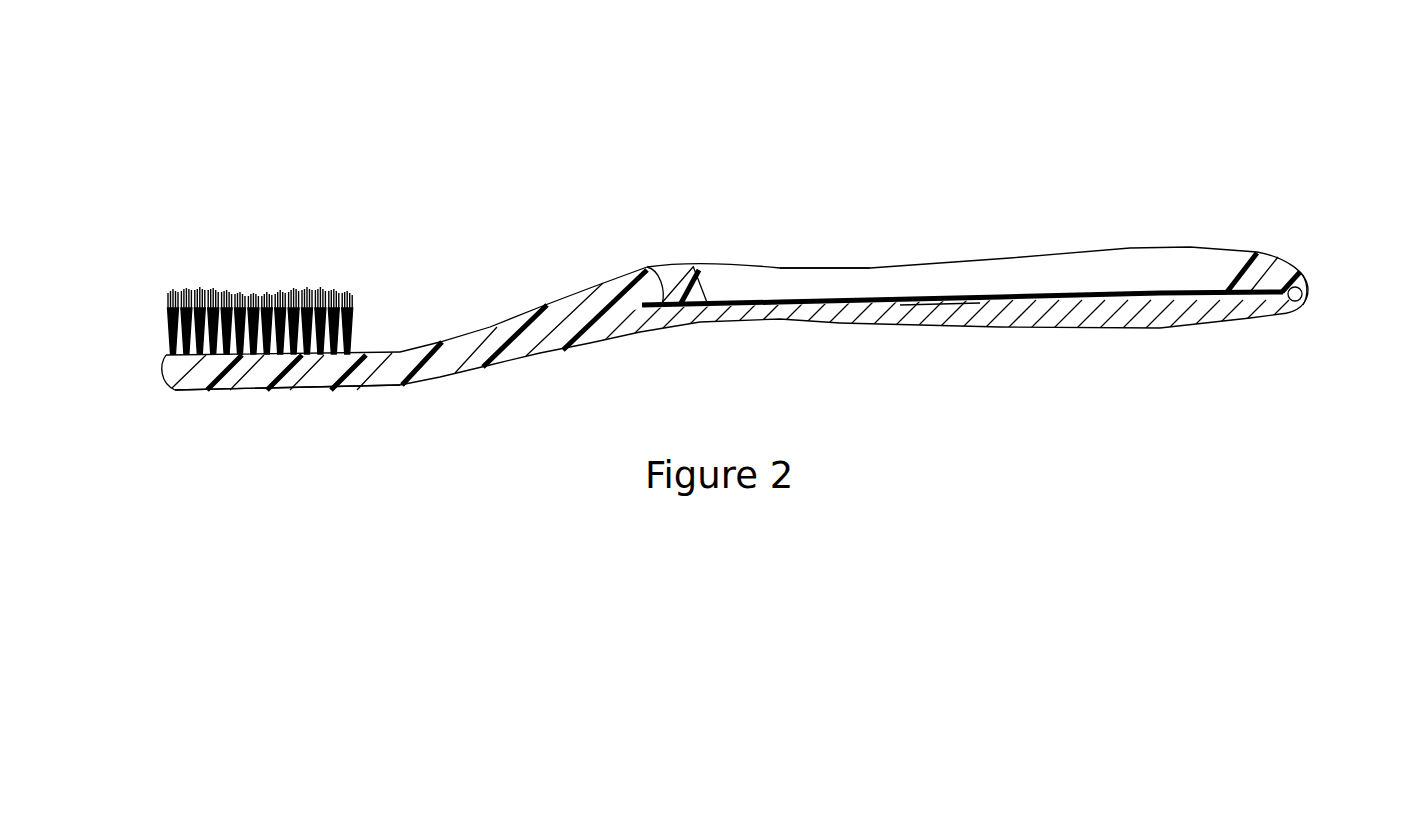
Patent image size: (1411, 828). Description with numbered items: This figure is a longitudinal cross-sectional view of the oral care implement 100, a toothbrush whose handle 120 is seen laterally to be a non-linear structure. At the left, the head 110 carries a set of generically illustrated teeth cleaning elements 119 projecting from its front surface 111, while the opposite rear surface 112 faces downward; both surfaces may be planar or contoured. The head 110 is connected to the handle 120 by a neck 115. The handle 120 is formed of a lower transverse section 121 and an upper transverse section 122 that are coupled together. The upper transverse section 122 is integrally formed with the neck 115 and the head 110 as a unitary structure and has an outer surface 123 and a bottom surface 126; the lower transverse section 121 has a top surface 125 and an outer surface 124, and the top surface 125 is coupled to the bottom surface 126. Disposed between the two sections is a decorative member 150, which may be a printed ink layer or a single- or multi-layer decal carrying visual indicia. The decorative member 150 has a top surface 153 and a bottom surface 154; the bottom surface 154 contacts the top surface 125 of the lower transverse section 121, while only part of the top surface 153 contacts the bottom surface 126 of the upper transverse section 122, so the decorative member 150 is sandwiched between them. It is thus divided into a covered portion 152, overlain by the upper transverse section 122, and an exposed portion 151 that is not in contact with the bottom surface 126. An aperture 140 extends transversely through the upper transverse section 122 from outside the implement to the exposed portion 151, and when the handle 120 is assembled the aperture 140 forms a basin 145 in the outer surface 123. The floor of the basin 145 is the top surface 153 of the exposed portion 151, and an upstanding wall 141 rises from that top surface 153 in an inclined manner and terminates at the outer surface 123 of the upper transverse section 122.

The oral care implement 100 is at (400, 112).
The head 110 is at (172, 378).
The front surface 111 is at (168, 355).
The rear surface 112 is at (236, 392).
The neck 115 is at (484, 374).
The teeth cleaning elements 119 is at (222, 293).
The handle 120 is at (1041, 341).
The lower transverse section 121 is at (877, 312).
The upper transverse section 122 is at (500, 332).
The outer surface 123 is at (673, 265).
The outer surface 124 is at (1117, 330).
The top surface 125 is at (1308, 288).
The bottom surface 126 is at (1303, 283).
The aperture 140 is at (798, 266).
The basin 145 is at (798, 266).
The upstanding wall 141 is at (700, 268).
The decorative member 150 is at (1074, 293).
The exposed portion 151 is at (897, 290).
The covered portion 152 is at (645, 270).
The top surface 153 is at (994, 297).
The bottom surface 154 is at (937, 305).